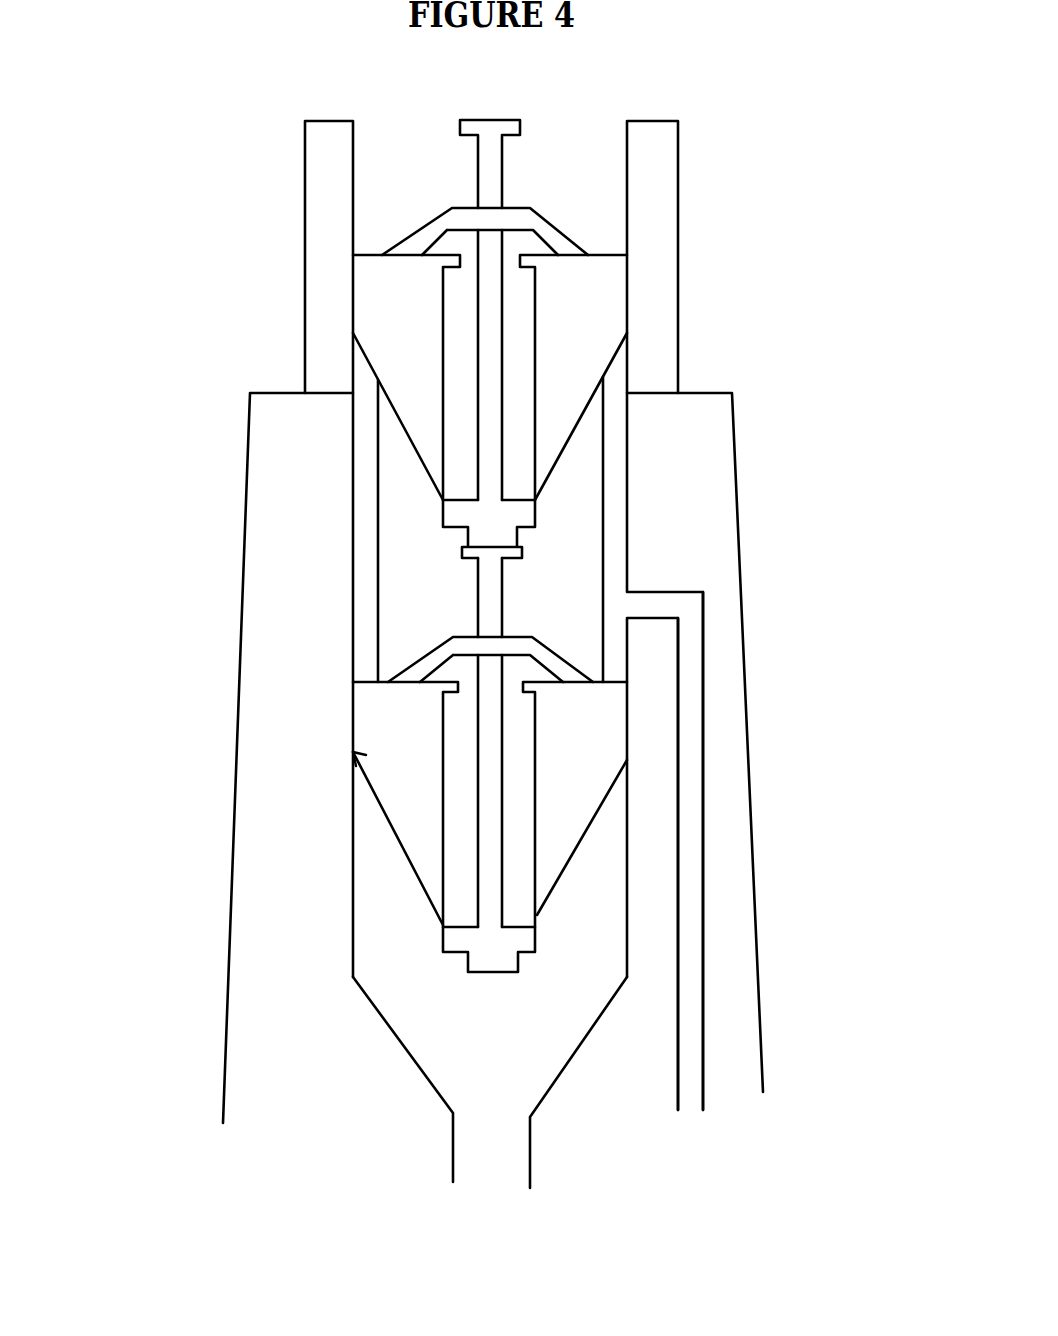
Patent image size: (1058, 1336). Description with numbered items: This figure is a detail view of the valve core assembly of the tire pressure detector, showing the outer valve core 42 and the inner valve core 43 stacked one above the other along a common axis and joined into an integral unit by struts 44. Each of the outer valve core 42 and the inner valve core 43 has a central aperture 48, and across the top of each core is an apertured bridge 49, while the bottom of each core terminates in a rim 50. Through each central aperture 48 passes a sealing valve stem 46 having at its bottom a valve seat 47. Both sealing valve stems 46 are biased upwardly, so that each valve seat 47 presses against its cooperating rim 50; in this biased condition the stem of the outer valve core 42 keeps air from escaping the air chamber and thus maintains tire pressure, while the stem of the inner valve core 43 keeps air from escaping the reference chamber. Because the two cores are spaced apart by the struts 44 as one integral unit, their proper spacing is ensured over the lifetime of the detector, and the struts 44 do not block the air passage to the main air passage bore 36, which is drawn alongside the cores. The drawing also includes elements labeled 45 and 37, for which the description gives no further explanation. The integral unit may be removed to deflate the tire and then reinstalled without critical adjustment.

The main air passage bore 36 is at (687, 607).
The bottom outlet 37 is at (495, 1097).
The outer valve core 42 is at (380, 317).
The inner valve core 43 is at (387, 733).
The struts 44 is at (378, 432).
The baffle 45 is at (540, 494).
The sealing valve stem 46 is at (492, 173).
The valve seat 47 is at (442, 522).
The central aperture 48 is at (463, 352).
The apertured bridge 49 is at (447, 225).
The rim 50 is at (432, 665).